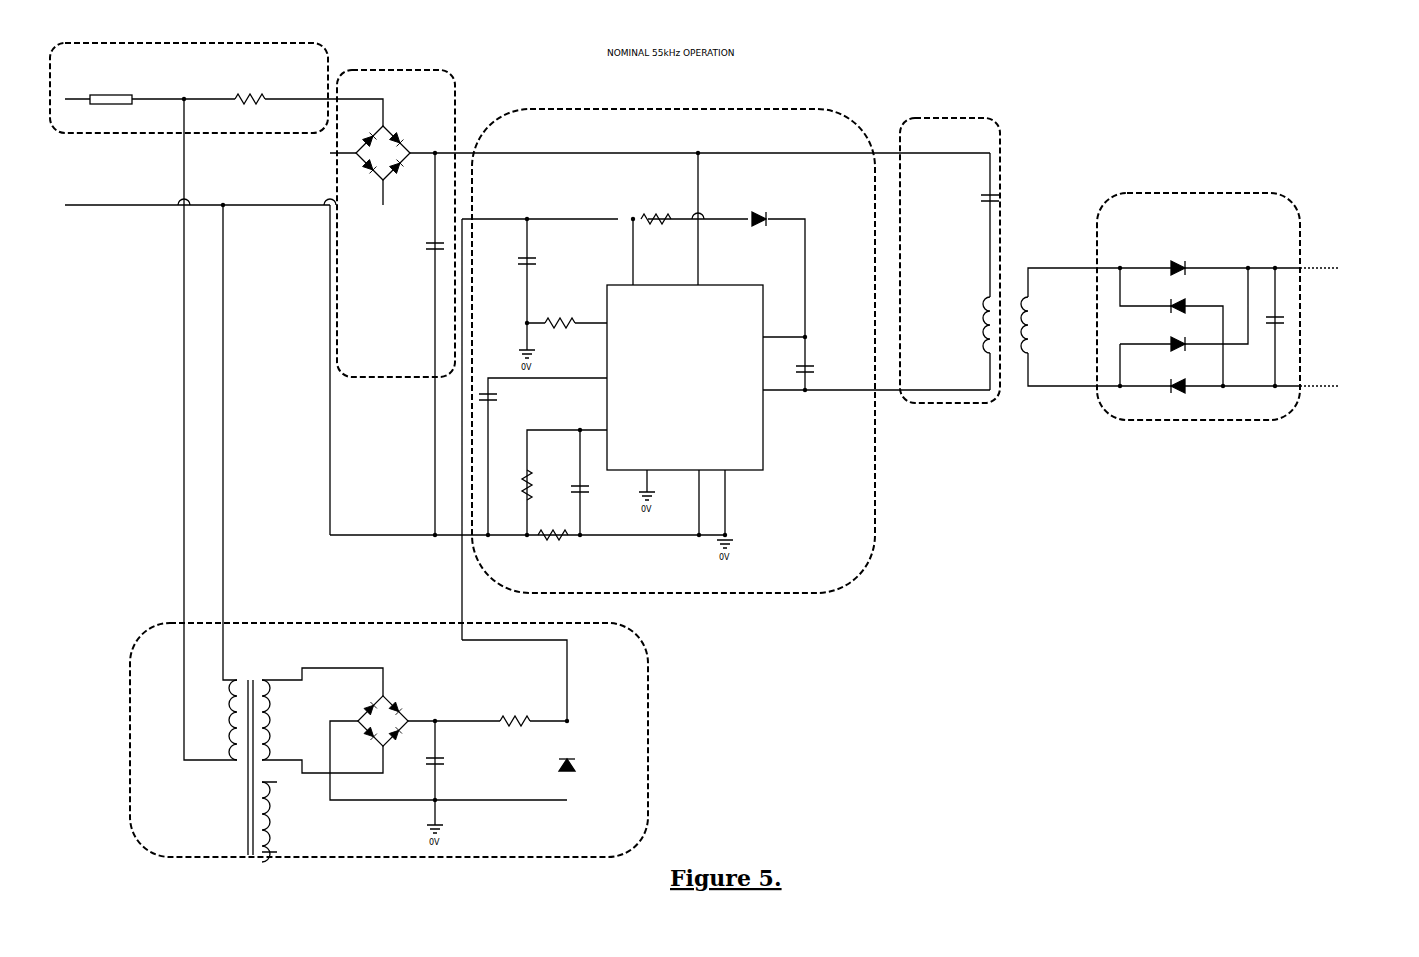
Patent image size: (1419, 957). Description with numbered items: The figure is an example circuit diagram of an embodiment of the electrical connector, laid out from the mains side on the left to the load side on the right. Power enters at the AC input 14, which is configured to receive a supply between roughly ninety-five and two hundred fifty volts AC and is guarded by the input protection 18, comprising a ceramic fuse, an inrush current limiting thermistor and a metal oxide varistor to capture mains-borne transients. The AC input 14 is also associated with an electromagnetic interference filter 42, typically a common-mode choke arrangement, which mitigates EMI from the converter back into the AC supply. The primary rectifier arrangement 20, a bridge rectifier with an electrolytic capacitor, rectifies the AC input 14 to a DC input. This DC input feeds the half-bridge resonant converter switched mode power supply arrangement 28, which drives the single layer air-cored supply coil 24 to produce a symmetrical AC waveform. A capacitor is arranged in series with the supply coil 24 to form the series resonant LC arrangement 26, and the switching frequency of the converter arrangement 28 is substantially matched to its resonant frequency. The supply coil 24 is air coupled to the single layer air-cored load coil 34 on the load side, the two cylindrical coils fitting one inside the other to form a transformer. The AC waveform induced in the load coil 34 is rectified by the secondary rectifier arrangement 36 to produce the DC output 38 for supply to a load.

The AC input 14 is at (119, 160).
The input protection 18 is at (336, 49).
The primary rectifier arrangement 20 is at (336, 377).
The supply coil 24 is at (1013, 283).
The series resonant LC arrangement 26 is at (951, 112).
The half-bridge resonant converter switched mode power supply arrangement 28 is at (847, 599).
The load coil 34 is at (1052, 300).
The secondary rectifier arrangement 36 is at (1210, 190).
The DC output 38 is at (1364, 343).
The electromagnetic interference (EMI) filter 42 is at (651, 750).